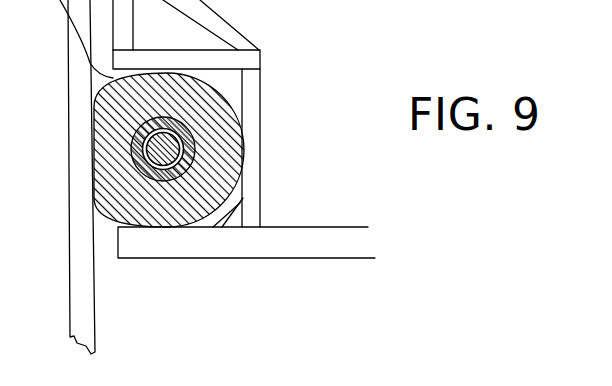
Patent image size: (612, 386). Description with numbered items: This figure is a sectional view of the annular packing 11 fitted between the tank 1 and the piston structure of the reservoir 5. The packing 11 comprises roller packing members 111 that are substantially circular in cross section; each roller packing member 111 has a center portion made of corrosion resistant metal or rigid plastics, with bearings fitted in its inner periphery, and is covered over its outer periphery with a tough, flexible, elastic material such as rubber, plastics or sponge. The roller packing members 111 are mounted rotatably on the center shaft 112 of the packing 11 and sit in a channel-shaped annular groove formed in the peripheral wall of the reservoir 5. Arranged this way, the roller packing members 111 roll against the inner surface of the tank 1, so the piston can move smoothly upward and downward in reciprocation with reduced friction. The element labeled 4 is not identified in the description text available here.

The tank 1 is at (78, 82).
The base beam 4 is at (263, 312).
The reservoir 5 is at (342, 169).
The annular packing 11 is at (240, 190).
The roller packing member 111 is at (203, 110).
The center shaft 112 is at (178, 148).